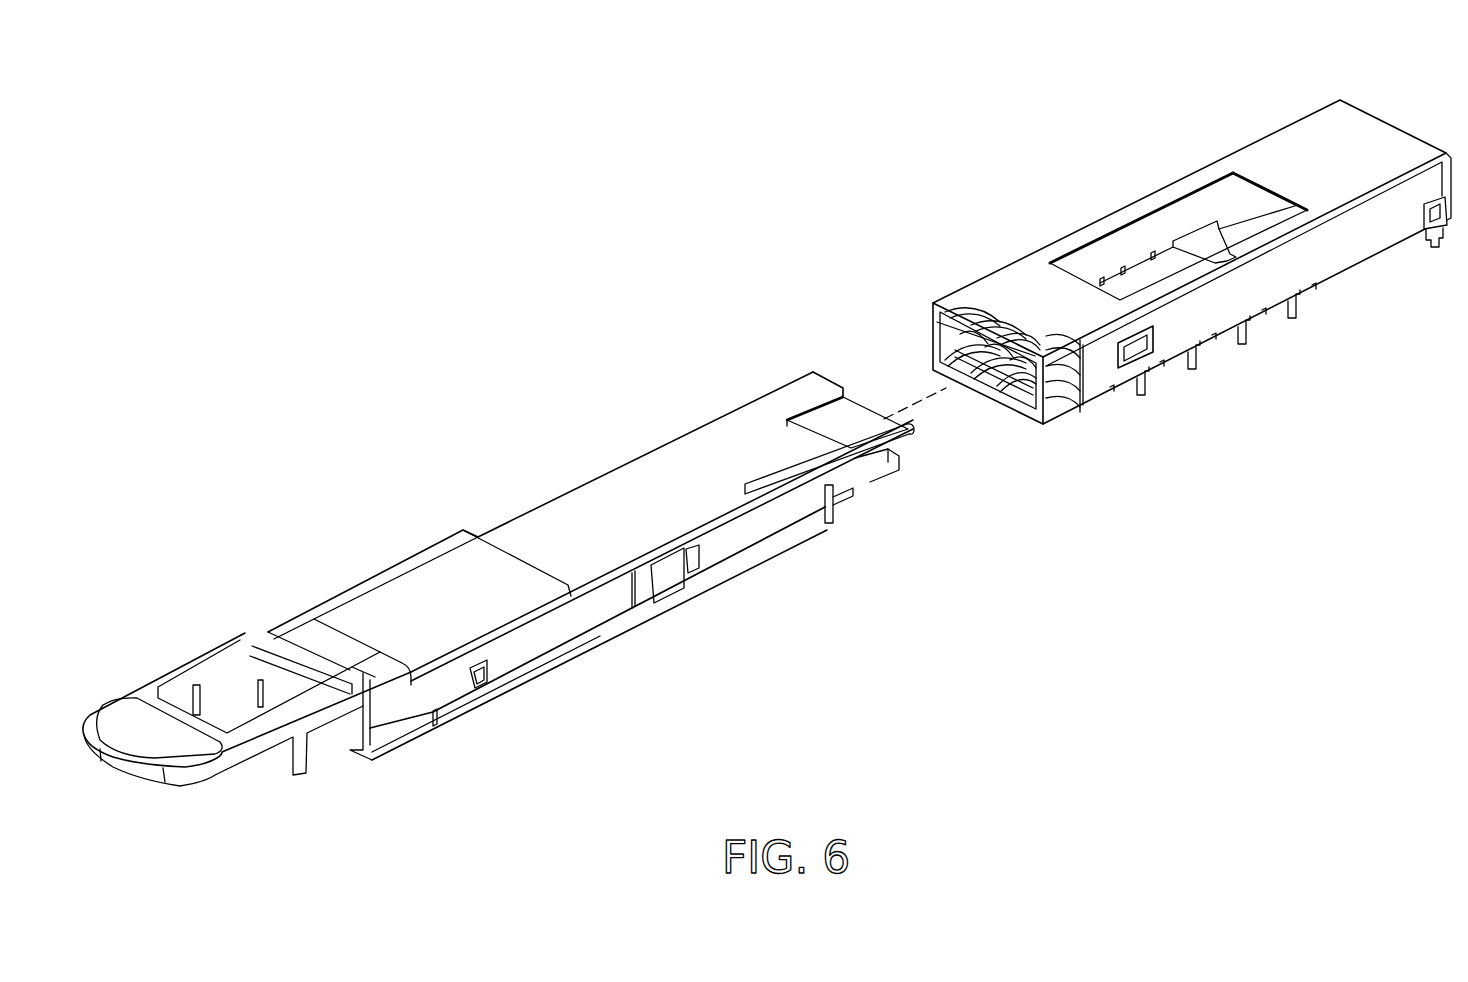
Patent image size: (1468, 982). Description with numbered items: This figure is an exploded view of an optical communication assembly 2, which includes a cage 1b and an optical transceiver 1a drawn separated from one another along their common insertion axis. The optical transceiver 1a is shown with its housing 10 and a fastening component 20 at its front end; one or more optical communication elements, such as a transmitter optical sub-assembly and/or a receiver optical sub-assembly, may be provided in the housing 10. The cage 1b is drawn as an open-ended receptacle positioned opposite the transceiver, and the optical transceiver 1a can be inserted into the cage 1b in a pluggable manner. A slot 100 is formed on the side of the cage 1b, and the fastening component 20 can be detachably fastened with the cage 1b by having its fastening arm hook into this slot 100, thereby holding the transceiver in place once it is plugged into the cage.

The optical communication assembly 2 is at (382, 159).
The optical transceiver 1a is at (529, 481).
The cage 1b is at (1236, 146).
The housing 10 is at (711, 450).
The fastening component 20 is at (427, 695).
The slot 100 is at (1148, 352).